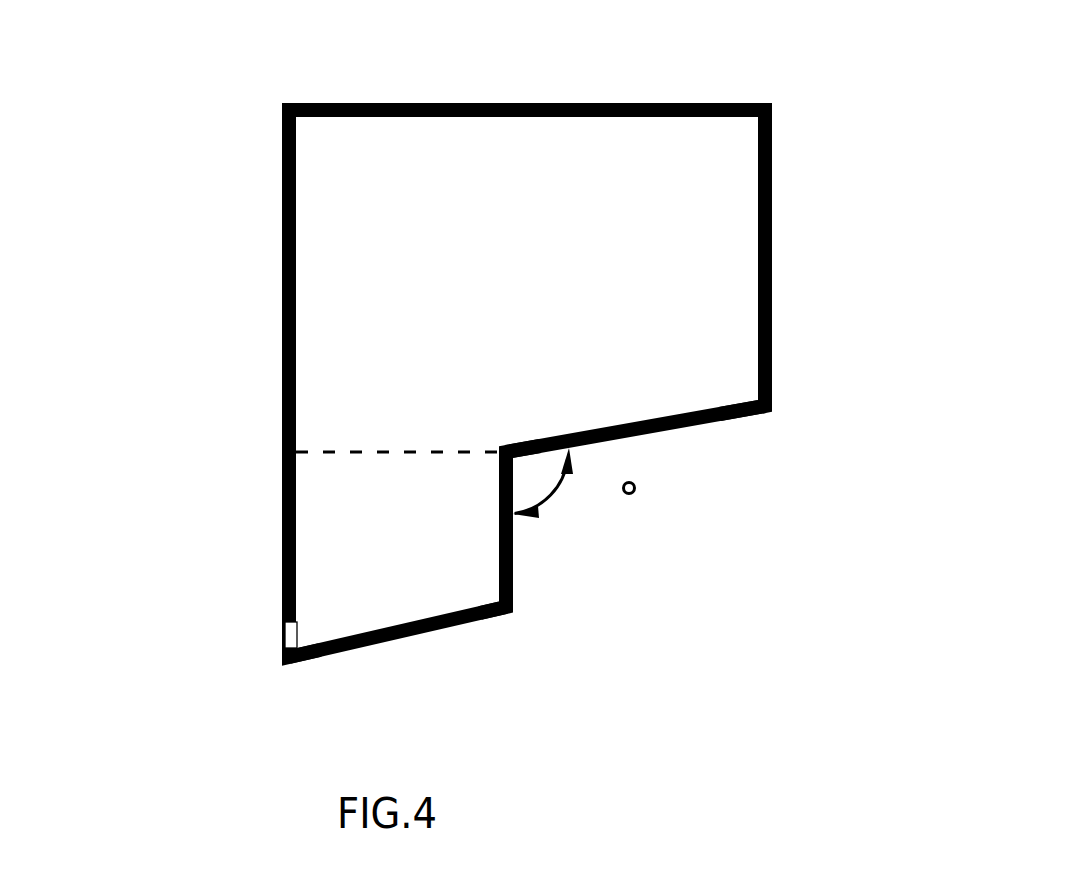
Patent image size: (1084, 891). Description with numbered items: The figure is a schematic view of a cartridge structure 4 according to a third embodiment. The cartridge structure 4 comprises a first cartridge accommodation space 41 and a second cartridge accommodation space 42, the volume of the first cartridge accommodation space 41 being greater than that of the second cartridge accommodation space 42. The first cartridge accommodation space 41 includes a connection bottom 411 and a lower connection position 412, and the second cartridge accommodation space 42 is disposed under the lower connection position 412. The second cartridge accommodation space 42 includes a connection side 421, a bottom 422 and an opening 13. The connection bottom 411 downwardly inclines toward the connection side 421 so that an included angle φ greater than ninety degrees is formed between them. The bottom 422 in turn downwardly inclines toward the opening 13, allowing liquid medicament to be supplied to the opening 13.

The cartridge structure 4 is at (553, 67).
The first cartridge accommodation space 41 is at (737, 242).
The connection bottom 411 is at (670, 433).
The lower connection position 412 is at (401, 405).
The second cartridge accommodation space 42 is at (320, 538).
The connection side 421 is at (513, 582).
The bottom 422 is at (407, 638).
The opening 13 is at (284, 636).